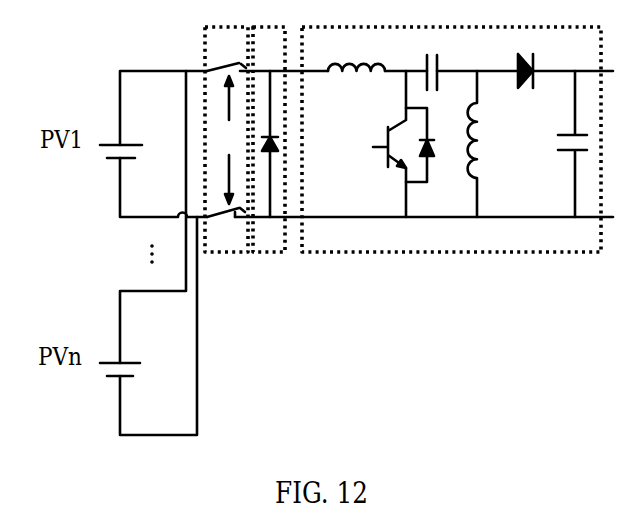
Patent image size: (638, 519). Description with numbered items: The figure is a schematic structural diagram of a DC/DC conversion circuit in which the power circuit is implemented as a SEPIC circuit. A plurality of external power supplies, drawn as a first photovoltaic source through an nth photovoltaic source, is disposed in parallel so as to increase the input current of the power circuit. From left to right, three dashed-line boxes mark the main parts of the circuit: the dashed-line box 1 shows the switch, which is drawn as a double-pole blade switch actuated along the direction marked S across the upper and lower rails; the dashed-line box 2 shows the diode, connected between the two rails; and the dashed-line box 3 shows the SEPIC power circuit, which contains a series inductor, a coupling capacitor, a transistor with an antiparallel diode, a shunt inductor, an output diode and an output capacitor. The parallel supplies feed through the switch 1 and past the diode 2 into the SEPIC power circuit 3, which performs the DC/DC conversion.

The switch 1 is at (218, 253).
The diode 2 is at (263, 253).
The SEPIC power circuit 3 is at (402, 253).